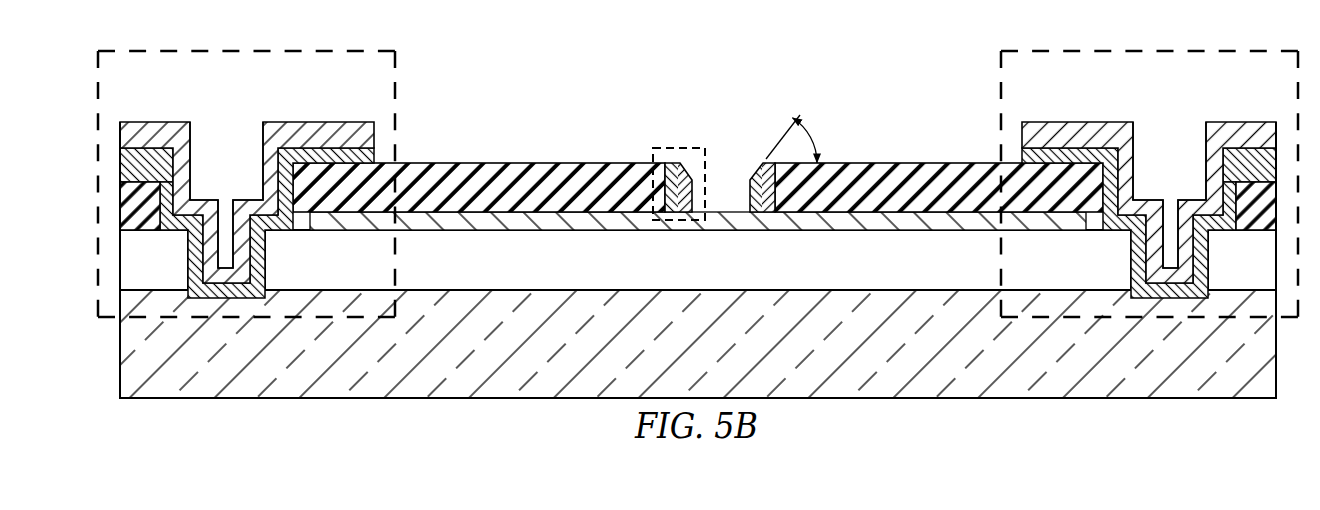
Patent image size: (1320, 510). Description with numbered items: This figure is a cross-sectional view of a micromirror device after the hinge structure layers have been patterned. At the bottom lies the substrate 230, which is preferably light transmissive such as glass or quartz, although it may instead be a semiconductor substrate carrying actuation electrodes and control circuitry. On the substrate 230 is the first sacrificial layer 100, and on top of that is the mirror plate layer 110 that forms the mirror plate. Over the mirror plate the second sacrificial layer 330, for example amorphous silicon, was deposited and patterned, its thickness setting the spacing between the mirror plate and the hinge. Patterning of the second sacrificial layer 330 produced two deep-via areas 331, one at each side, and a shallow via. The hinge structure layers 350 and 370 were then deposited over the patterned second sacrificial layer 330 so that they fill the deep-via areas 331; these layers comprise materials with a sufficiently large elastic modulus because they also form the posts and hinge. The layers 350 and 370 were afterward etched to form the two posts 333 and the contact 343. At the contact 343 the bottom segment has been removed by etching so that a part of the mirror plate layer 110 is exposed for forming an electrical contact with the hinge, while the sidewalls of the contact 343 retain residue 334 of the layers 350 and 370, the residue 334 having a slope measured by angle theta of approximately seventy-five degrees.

The first sacrificial layer 100 is at (170, 271).
The mirror plate layer 110 is at (592, 224).
The substrate 230 is at (713, 355).
The second sacrificial layer 330 is at (535, 163).
The deep-via area 331 is at (227, 120).
The post 333 is at (397, 92).
The residue 334 is at (680, 146).
The contact 343 is at (732, 157).
The hinge structure layer 350 is at (266, 253).
The hinge structure layer 370 is at (325, 130).